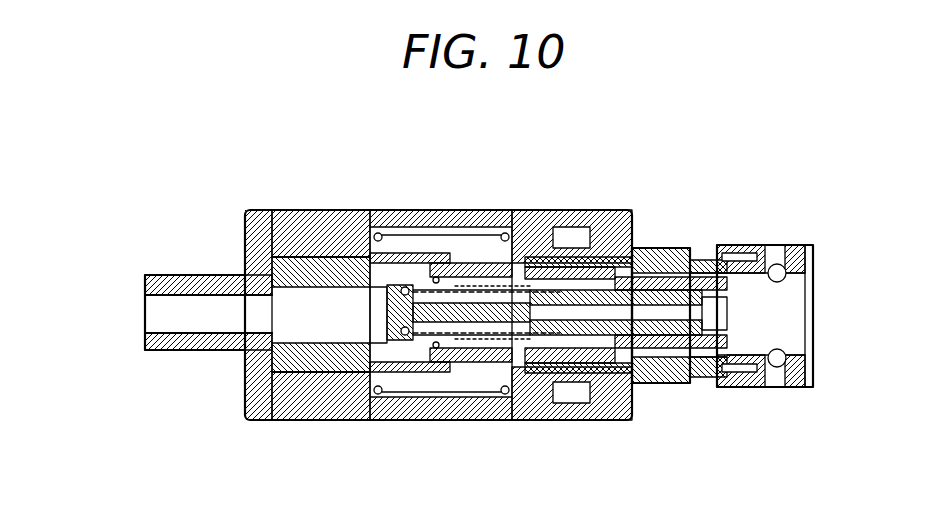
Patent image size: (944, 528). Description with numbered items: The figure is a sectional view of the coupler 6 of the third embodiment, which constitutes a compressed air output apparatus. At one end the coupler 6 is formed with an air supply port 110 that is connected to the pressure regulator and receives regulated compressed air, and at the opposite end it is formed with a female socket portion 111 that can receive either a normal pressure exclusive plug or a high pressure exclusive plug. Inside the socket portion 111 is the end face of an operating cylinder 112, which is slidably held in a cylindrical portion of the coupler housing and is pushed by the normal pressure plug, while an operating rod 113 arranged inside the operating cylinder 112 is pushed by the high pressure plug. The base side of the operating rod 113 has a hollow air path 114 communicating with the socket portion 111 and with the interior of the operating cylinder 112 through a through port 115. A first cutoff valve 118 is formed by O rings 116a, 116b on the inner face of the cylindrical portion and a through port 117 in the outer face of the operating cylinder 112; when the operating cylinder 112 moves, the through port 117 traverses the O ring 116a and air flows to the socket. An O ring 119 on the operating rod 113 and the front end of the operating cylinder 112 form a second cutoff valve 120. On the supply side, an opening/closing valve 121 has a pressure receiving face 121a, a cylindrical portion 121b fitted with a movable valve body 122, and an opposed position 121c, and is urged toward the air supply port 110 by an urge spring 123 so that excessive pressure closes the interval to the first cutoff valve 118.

The coupler 6 is at (175, 194).
The air supply port 110 is at (163, 320).
The socket portion 111 is at (797, 343).
The operating cylinder 112 is at (677, 250).
The operating rod 113 is at (590, 405).
The air path 114 is at (648, 313).
The through port 115 is at (545, 390).
The O ring 116a is at (438, 262).
The O ring 116b is at (545, 270).
The through port 117 is at (483, 263).
The first cutoff valve 118 is at (500, 250).
The O ring 119 is at (360, 262).
The second cutoff valve 120 is at (413, 338).
The opening/closing valve 121 is at (290, 212).
The pressure receiving face 121a is at (245, 249).
The cylindrical portion 121b is at (318, 367).
The position opposed to the pressure receiving face 121c is at (394, 350).
The movable valve body 122 is at (450, 350).
The urge spring 123 is at (378, 233).